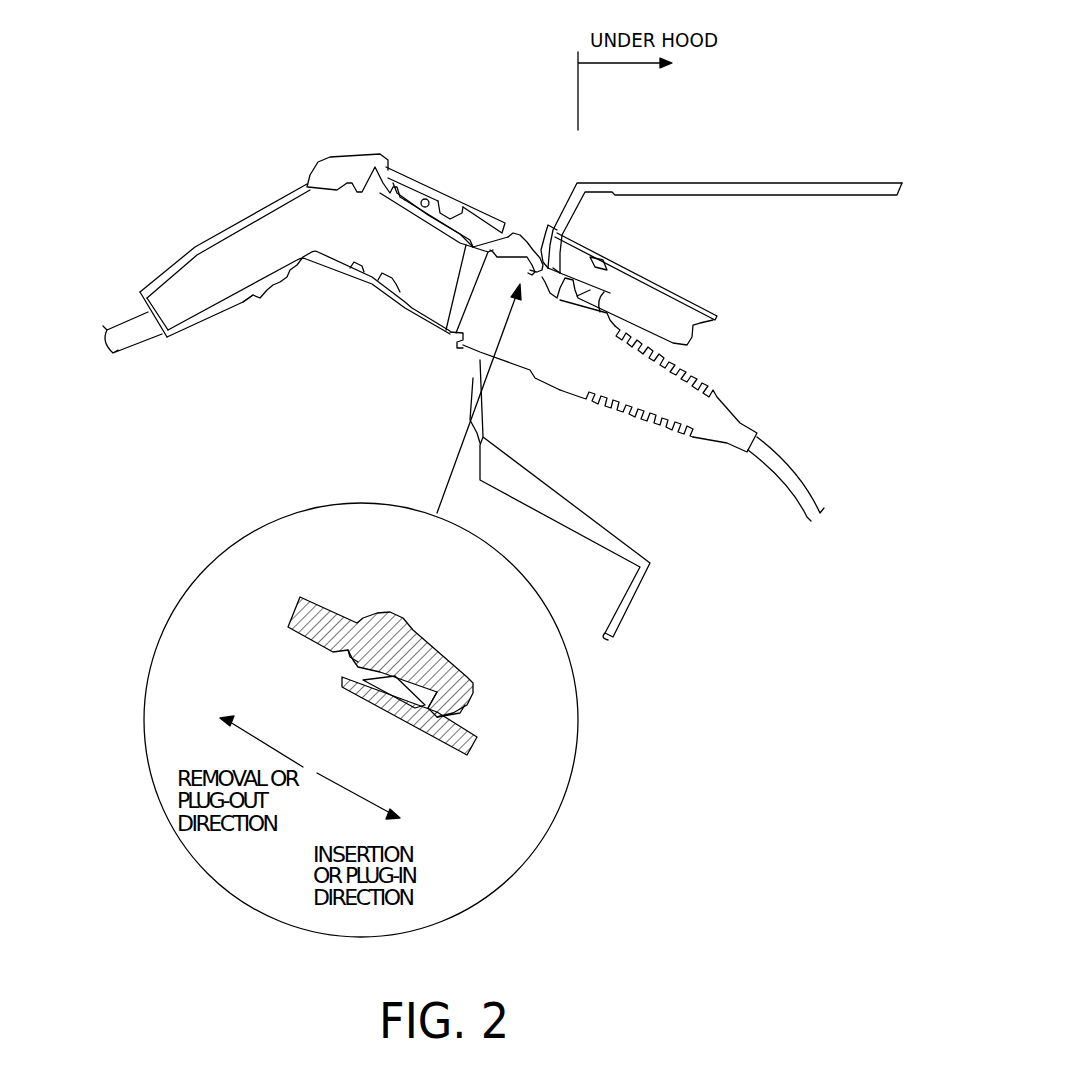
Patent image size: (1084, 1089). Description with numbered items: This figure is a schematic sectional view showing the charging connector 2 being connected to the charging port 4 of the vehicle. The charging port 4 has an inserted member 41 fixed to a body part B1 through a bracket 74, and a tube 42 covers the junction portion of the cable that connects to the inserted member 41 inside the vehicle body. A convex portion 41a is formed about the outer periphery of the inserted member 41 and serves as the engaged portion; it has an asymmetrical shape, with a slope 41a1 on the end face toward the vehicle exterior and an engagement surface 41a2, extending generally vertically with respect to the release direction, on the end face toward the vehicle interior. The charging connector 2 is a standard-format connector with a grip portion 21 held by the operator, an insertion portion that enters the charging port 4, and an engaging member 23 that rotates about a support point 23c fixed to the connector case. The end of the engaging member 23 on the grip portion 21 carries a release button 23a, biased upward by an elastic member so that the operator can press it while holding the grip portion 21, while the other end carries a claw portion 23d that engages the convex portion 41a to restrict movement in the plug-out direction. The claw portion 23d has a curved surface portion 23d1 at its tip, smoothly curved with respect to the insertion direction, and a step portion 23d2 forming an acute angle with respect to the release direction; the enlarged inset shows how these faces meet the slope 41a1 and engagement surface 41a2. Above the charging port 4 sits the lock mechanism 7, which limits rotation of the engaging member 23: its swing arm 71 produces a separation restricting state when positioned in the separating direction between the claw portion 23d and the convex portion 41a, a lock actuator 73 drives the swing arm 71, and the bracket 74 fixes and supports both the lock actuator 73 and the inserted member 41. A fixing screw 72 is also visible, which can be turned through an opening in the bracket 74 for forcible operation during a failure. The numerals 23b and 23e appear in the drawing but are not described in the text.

The charging connector 2 is at (262, 197).
The grip portion 21 is at (282, 287).
The engaging member 23 is at (442, 204).
The release button 23a is at (338, 166).
The lock claw 23b is at (462, 222).
The support point 23c is at (428, 198).
The claw portion 23d is at (512, 232).
The curved surface portion 23d1 is at (440, 713).
The step portion 23d2 is at (430, 708).
The engagement portion 23e is at (549, 258).
The charging port 4 is at (473, 357).
The inserted member 41 is at (458, 338).
The convex portion 41a is at (520, 256).
The slope 41a1 is at (340, 657).
The engagement surface 41a2 is at (437, 700).
The tube 42 is at (630, 417).
The lock mechanism 7 is at (677, 245).
The swing arm 71 is at (566, 258).
The fixing screw 72 is at (600, 253).
The lock actuator 73 is at (680, 325).
The bracket 74 is at (708, 313).
The body part B1 is at (788, 183).